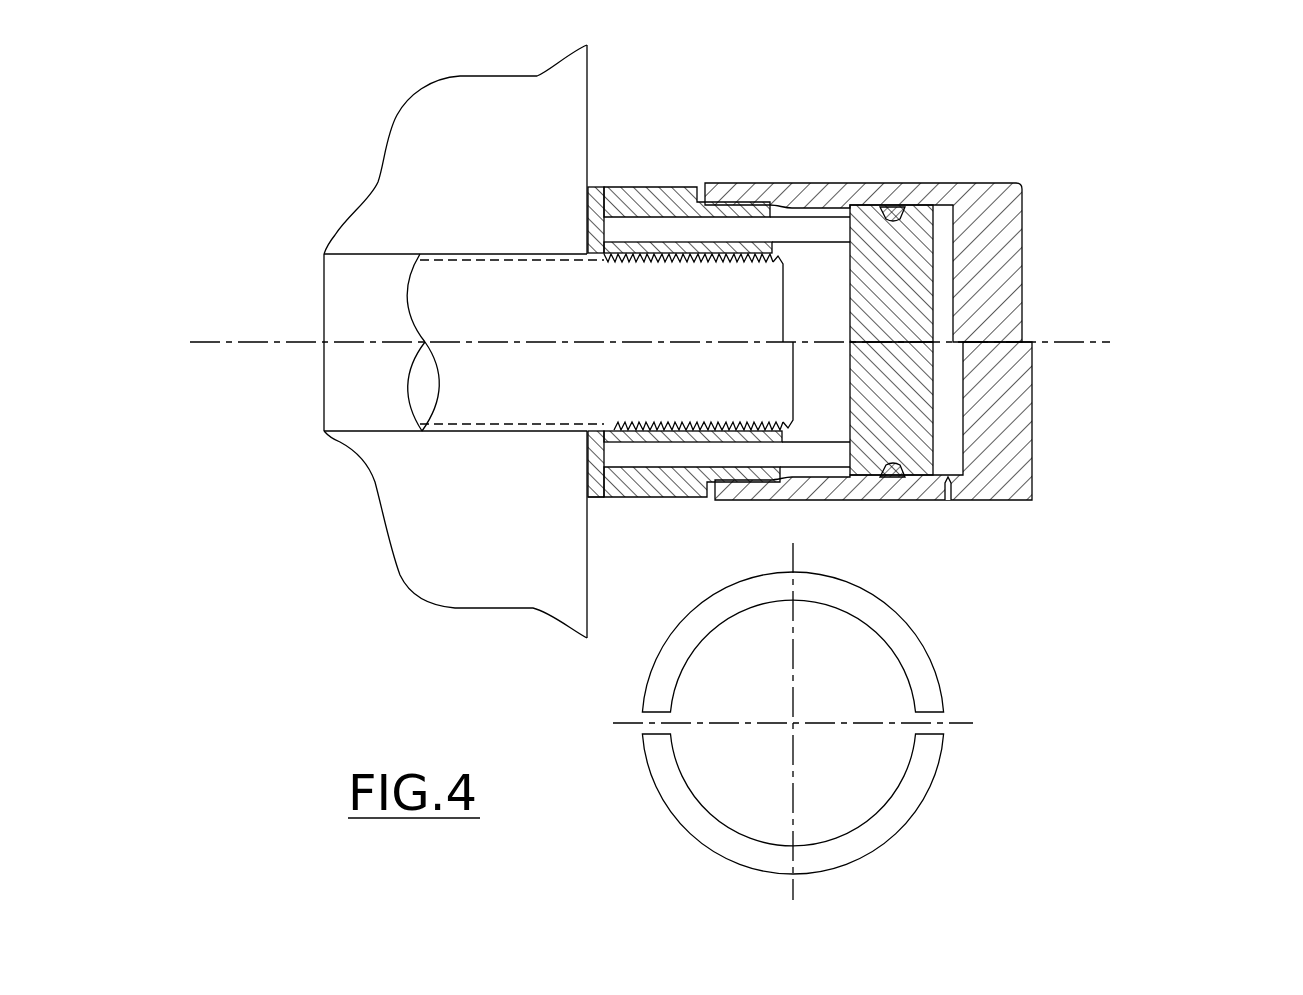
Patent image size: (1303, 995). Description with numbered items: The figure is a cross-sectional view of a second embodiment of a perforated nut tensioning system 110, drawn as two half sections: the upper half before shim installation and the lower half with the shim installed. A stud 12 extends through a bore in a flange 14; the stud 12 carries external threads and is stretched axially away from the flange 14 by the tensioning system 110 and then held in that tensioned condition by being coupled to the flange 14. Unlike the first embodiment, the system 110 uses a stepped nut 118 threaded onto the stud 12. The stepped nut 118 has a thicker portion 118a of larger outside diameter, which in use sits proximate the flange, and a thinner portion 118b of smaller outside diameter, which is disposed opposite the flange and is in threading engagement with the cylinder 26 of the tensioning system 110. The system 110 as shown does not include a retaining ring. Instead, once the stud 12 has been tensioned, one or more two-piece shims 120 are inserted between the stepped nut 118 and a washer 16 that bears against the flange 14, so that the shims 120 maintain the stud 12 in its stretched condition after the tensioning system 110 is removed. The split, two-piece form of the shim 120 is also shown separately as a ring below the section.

The perforated nut tensioning system 110 is at (966, 104).
The flange 14 is at (510, 153).
The stud 12 is at (574, 392).
The thicker portion of stepped nut 118a is at (620, 187).
The stepped nut 118 is at (668, 187).
The thinner portion of stepped nut 118b is at (742, 183).
The cylinder 26 is at (985, 183).
The two-piece shim 120 is at (887, 606).
The washer 16 is at (600, 497).